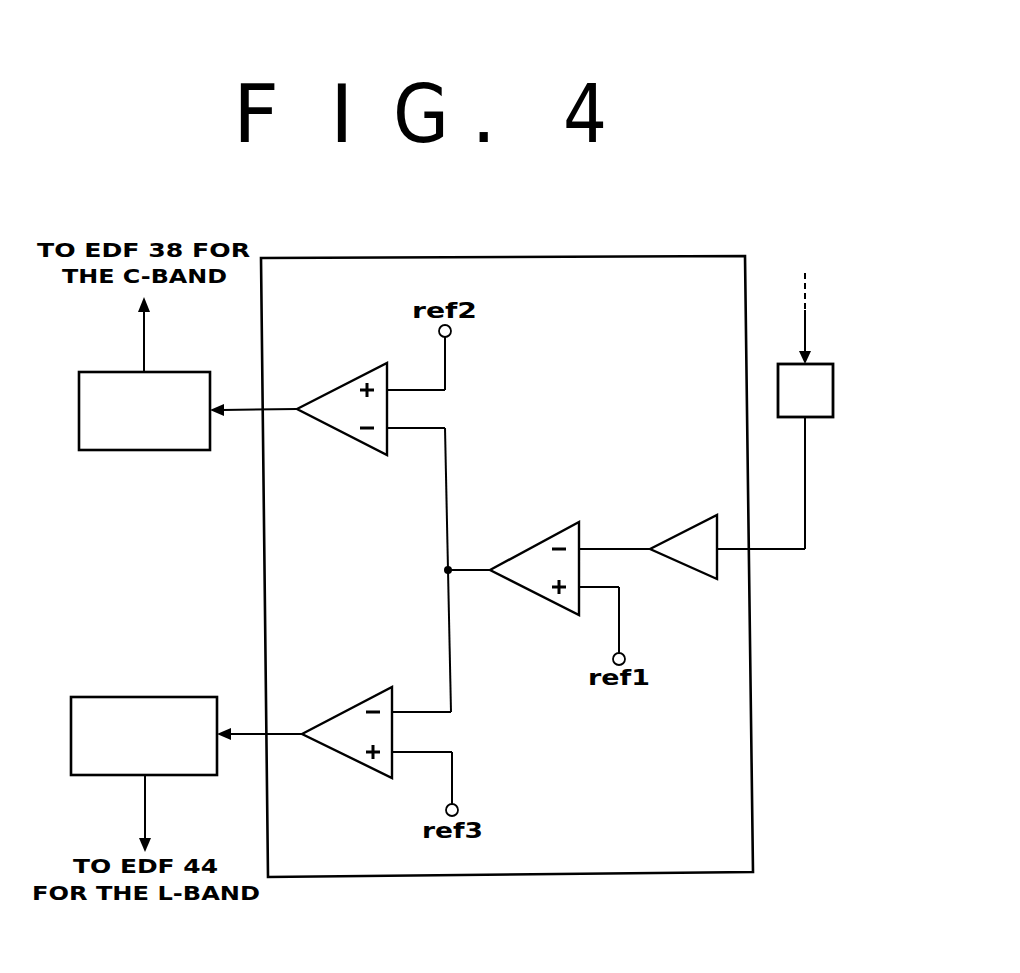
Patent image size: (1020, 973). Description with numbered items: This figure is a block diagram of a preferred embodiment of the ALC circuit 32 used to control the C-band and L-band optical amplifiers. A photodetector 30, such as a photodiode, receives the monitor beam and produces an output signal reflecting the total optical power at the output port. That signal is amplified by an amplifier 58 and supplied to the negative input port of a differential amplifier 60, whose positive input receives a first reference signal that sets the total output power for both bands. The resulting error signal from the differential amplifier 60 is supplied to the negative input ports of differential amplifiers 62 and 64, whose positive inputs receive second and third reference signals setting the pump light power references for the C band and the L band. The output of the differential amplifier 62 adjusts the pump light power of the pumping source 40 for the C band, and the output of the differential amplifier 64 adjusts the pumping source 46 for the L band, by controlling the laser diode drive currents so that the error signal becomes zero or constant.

The photodetector 30 is at (833, 392).
The ALC circuit 32 is at (393, 878).
The pumping source 40 is at (145, 451).
The pumping source 46 is at (144, 697).
The amplifier 58 is at (677, 529).
The differential amplifier 60 is at (538, 544).
The differential amplifier 62 is at (338, 389).
The differential amplifier 64 is at (337, 714).